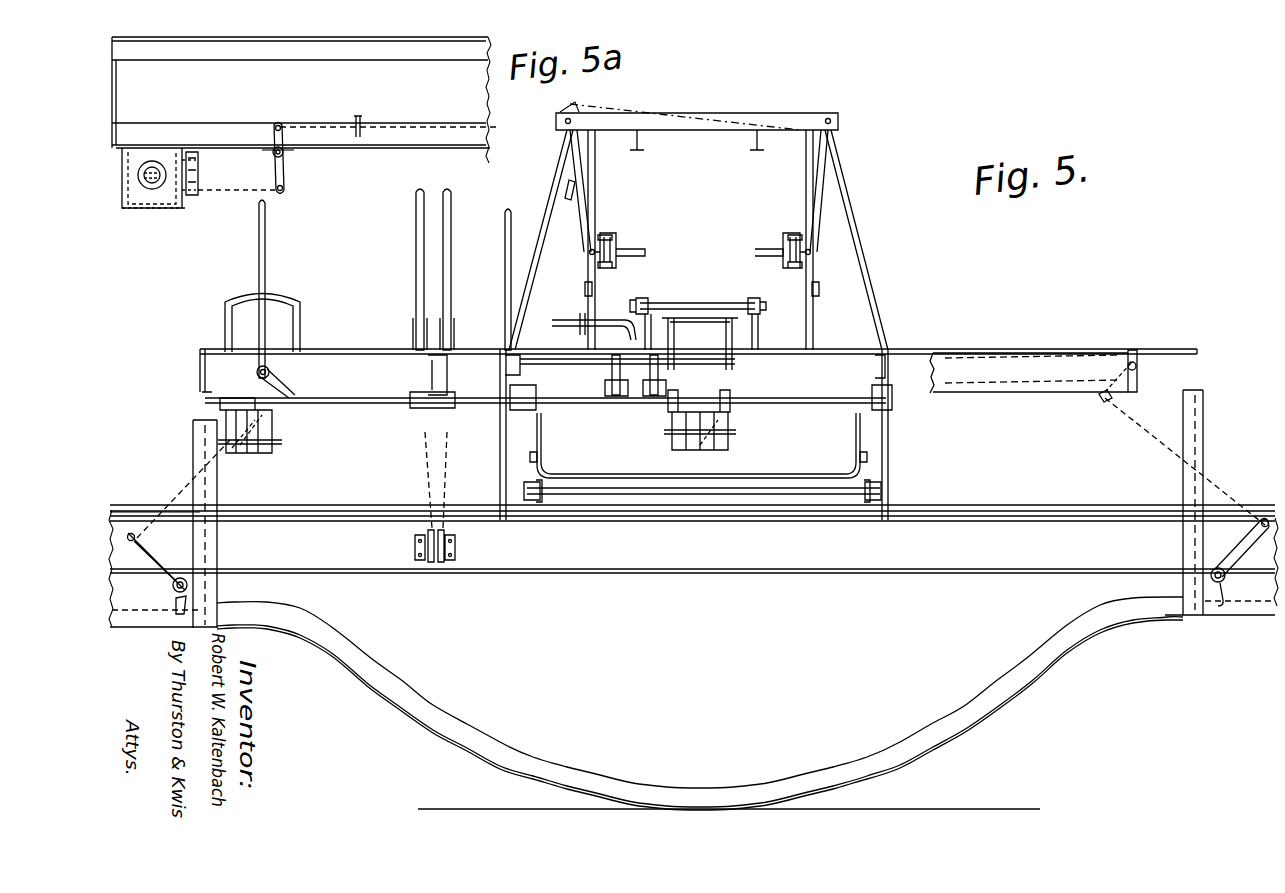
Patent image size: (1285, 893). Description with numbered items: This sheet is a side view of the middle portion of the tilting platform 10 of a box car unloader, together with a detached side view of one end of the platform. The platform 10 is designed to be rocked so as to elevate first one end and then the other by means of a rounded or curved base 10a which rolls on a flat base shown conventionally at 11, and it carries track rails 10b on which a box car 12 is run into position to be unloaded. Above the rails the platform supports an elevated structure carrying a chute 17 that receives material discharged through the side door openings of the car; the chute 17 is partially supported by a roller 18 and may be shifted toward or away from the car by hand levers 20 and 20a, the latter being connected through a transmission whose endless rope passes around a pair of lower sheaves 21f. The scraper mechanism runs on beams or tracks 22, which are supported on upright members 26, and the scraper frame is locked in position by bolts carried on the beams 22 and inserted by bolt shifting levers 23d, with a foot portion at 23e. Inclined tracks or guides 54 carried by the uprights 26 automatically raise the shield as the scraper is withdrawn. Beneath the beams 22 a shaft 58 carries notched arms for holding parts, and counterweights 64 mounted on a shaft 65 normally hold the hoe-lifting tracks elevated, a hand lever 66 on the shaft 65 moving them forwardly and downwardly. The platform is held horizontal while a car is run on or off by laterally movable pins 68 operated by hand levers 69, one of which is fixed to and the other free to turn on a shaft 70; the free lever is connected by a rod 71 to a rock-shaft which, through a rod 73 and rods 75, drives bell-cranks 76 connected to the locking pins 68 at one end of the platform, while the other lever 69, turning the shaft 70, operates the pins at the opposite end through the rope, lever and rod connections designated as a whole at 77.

In FIG. 5, the tilting platform 10 is at (693, 566).
In FIG. 5, the rounded or curved base 10a is at (1022, 705).
In FIG. 5, the track rails 10b is at (146, 502).
In FIG. 5, the flat base 11 is at (988, 796).
In FIG. 5, the box car 12 is at (180, 578).
In FIG. 5, the chute 17 is at (855, 433).
In FIG. 5, the roller 18 is at (627, 492).
In FIG. 5, the hand lever 20 is at (449, 204).
In FIG. 5, the hand lever 20a is at (415, 210).
In FIG. 5, the lower sheaves 21f is at (442, 565).
In FIG. 5, the beams or tracks 22 is at (606, 235).
In FIG. 5, the bolt shifting levers 23d is at (578, 212).
In FIG. 5, the brace foot 23e is at (616, 268).
In FIG. 5, the upright members 26 is at (596, 184).
In FIG. 5, the inclined tracks or guides 54 is at (750, 150).
In FIG. 5, the shaft 58 is at (702, 302).
In FIG. 5, the counterweights 64 is at (610, 388).
In FIG. 5, the shaft 65 is at (560, 366).
In FIG. 5, the hand lever 66 is at (505, 270).
In FIG. 5A, the laterally movable pins 68 is at (152, 190).
In FIG. 5, the hand levers 69 is at (267, 234).
In FIG. 5, the shaft 70 is at (257, 375).
In FIG. 5, the rod 71 is at (175, 492).
In FIG. 5A, the rod 73 is at (333, 127).
In FIG. 5A, the rods 75 is at (240, 192).
In FIG. 5A, the bell-cranks 76 is at (192, 196).
In FIG. 5, the rope, lever and rod connections 77 is at (1025, 352).